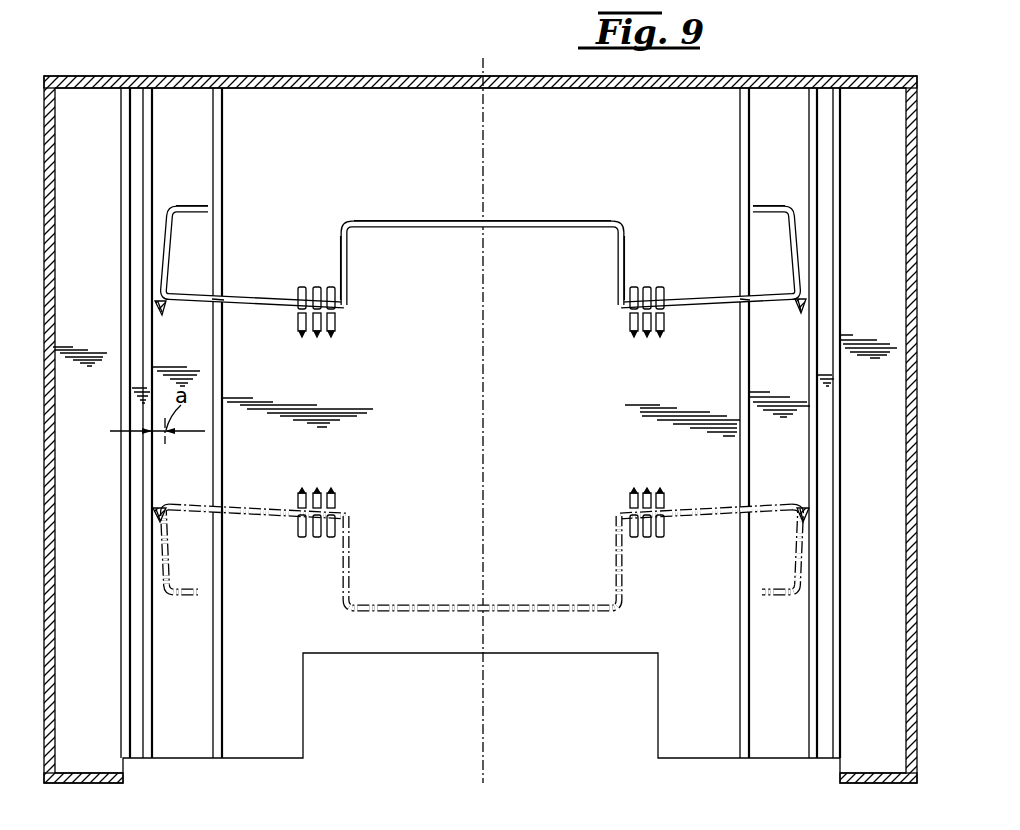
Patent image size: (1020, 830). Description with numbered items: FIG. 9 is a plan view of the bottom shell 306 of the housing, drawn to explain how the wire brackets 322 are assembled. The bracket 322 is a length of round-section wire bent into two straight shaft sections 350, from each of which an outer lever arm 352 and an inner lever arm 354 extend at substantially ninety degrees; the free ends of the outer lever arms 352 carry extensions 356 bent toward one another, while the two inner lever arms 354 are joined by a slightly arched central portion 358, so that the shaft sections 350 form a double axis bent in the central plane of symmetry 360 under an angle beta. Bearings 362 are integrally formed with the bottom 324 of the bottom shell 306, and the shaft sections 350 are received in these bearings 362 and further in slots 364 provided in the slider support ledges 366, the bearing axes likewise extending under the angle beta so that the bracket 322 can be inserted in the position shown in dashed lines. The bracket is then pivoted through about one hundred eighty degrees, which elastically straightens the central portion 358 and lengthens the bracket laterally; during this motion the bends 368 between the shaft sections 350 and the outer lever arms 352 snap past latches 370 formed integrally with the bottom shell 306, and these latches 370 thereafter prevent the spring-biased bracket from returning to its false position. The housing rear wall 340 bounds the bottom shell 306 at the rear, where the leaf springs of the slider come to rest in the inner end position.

The bottom shell 306 is at (76, 785).
The bracket 322 is at (541, 219).
The bottom 324 is at (415, 105).
The housing rear wall 340 is at (300, 75).
The shaft section 350 is at (268, 300).
The outer lever arm 352 is at (166, 245).
The inner lever arm 354 is at (345, 263).
The extension 356 is at (186, 206).
The central portion 358 is at (427, 221).
The central plane of symmetry 360 is at (483, 470).
The bearing 362 is at (302, 337).
The slot 364 is at (220, 316).
The slider support ledge 366 is at (222, 456).
The bend 368 is at (157, 302).
The latch 370 is at (160, 313).